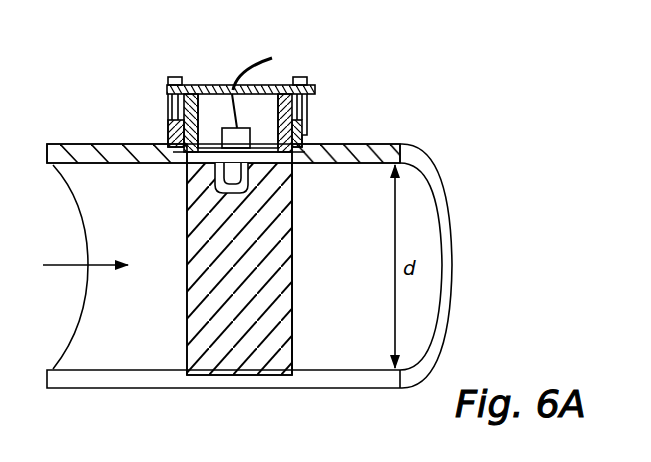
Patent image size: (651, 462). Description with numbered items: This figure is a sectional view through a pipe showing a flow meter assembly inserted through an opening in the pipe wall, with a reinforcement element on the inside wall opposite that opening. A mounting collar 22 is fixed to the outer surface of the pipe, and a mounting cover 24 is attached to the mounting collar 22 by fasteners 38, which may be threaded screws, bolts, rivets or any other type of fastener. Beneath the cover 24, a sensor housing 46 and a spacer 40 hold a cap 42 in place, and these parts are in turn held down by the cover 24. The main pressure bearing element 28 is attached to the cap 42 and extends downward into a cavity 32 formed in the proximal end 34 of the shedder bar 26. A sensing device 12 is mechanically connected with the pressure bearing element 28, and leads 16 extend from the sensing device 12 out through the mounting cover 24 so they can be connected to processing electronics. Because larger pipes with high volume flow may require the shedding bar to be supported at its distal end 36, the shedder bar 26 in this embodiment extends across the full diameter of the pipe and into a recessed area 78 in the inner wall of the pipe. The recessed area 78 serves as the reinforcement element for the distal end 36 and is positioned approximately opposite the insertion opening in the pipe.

The sensing device 12 is at (238, 138).
The leads 16 is at (250, 60).
The mounting collar 22 is at (170, 130).
The mounting cover 24 is at (219, 84).
The shedder bar 26 is at (242, 273).
The pressure bearing element 28 is at (240, 181).
The cavity 32 is at (215, 189).
The proximal end 34 is at (299, 225).
The distal end 36 is at (294, 341).
The fasteners 38 is at (176, 77).
The spacer 40 is at (175, 100).
The cap 42 is at (270, 153).
The sensor housing 46 is at (198, 132).
The recessed area 78 is at (186, 369).